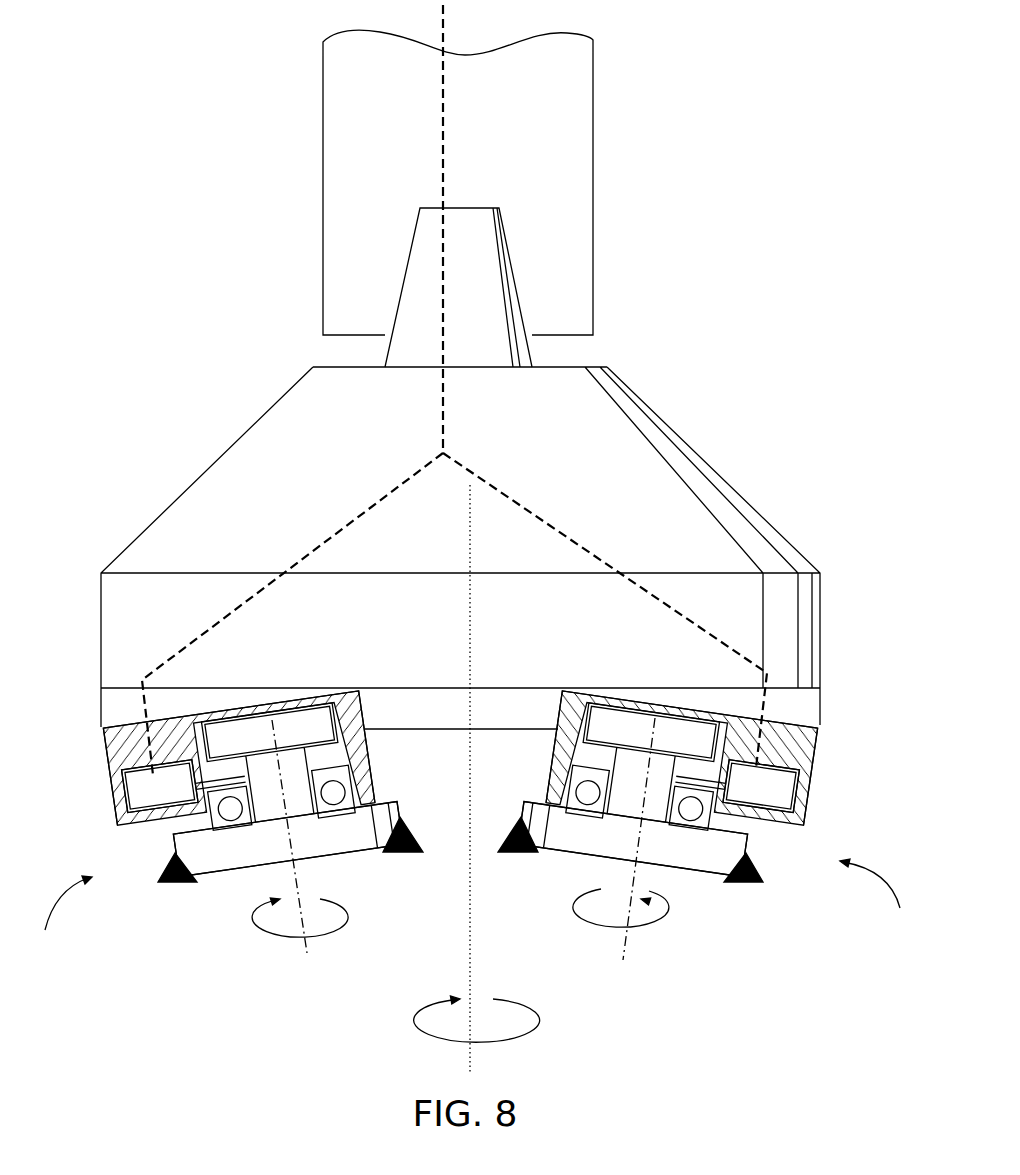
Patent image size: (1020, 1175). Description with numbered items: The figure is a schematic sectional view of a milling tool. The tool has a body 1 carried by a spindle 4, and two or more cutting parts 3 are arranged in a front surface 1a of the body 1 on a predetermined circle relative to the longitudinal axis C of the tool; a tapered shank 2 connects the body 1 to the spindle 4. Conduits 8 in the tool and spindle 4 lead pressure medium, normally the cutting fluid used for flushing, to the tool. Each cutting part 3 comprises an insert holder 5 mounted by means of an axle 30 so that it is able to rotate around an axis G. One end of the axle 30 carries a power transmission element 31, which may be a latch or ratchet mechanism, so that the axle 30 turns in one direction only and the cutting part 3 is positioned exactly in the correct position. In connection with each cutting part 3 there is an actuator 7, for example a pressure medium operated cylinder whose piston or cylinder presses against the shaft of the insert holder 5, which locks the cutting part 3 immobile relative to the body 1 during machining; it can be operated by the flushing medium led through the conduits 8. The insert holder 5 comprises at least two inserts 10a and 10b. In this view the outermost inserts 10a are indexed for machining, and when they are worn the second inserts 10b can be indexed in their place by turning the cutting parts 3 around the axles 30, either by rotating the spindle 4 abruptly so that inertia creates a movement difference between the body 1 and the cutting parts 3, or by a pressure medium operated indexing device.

The body 1 is at (245, 492).
The front surface 1a is at (410, 730).
The tapered shank 2 is at (433, 293).
The cutting part 3 is at (474, 831).
The spindle 4 is at (347, 116).
The insert holder 5 is at (212, 860).
The actuator 7 is at (137, 795).
The conduit 8 is at (443, 89).
The first insert 10a is at (177, 883).
The second insert 10b is at (410, 853).
The axle 30 is at (253, 763).
The power transmission element 31 is at (222, 740).
The longitudinal axis C is at (470, 1058).
The axis G is at (307, 943).